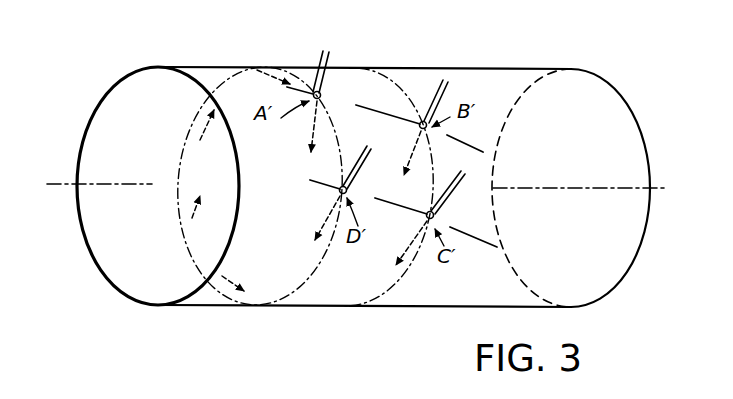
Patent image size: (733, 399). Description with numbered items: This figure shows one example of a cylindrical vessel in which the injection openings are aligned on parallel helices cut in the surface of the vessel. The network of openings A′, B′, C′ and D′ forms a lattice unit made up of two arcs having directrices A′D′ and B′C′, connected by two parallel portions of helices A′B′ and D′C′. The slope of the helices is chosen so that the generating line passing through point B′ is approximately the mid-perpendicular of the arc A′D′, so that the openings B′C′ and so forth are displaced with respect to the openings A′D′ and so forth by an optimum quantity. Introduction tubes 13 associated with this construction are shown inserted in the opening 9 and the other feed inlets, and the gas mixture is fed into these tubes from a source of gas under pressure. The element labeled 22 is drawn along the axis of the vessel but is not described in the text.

The opening 9 is at (331, 93).
The introduction tube 13 is at (312, 72).
The axis of rotation 22 is at (118, 186).